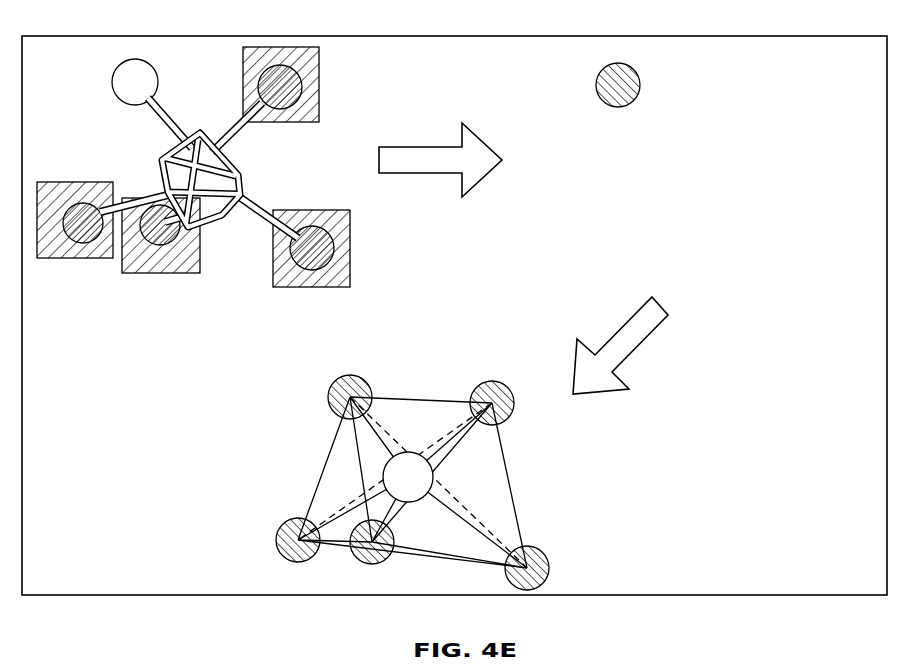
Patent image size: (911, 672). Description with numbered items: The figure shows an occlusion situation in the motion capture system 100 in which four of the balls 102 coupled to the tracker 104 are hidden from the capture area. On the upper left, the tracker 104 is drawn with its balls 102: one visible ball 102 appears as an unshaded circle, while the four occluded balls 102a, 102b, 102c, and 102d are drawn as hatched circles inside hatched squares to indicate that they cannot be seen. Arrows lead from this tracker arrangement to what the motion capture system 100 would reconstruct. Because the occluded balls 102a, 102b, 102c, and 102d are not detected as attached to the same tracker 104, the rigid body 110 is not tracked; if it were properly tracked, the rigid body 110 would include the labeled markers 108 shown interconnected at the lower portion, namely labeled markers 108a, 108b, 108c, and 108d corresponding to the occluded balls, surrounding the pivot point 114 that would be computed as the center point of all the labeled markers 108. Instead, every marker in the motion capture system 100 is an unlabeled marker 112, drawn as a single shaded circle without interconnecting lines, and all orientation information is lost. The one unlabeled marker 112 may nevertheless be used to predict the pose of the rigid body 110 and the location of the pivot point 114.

The motion capture system 100 is at (500, 78).
The ball 102 is at (152, 88).
The occluded ball 102a is at (300, 100).
The occluded ball 102b is at (85, 243).
The occluded ball 102c is at (168, 245).
The occluded ball 102d is at (330, 250).
The tracker 104 is at (238, 188).
The labeled marker 108 is at (372, 390).
The labeled marker 108a is at (514, 405).
The labeled marker 108b is at (310, 560).
The labeled marker 108c is at (392, 550).
The labeled marker 108d is at (549, 564).
The rigid body 110 is at (296, 432).
The unlabeled marker 112 is at (640, 83).
The pivot point 114 is at (430, 476).